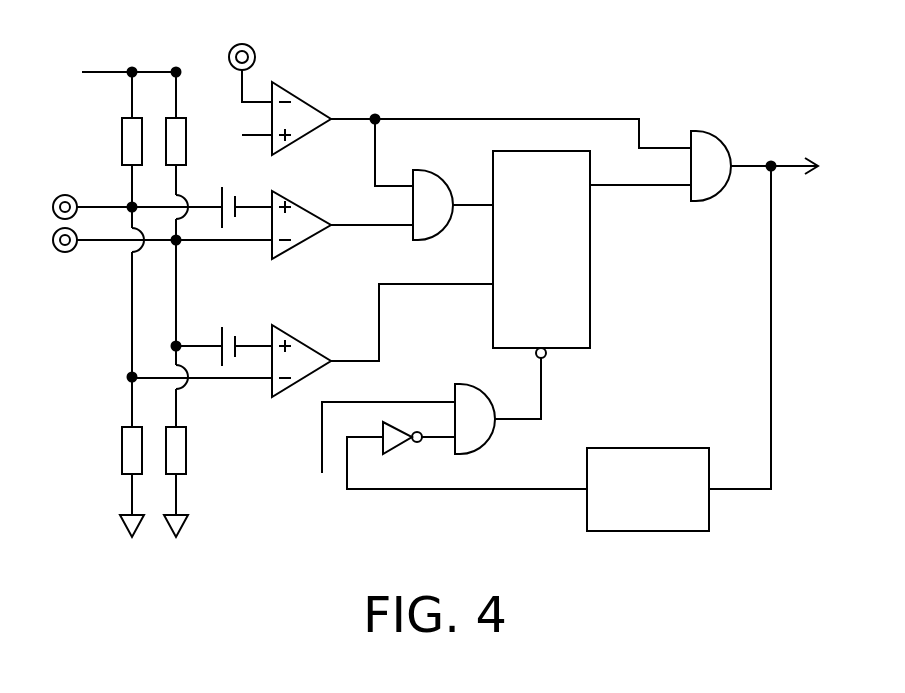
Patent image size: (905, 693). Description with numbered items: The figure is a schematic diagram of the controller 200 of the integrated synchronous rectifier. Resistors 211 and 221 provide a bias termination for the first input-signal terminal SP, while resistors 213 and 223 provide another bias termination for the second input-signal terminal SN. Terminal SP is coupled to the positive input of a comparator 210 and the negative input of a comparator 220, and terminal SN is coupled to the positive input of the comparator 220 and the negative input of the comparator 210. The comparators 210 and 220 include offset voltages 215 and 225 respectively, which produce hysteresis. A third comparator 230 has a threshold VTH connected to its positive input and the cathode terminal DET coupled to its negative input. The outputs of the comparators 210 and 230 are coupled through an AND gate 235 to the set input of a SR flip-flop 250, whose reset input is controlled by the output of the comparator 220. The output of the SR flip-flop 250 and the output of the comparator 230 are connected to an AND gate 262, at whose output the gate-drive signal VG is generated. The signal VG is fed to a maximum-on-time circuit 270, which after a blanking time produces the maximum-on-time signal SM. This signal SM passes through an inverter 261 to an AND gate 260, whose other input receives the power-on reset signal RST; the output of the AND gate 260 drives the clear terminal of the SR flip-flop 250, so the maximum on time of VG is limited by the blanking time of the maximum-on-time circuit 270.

The controller 200 is at (835, 77).
The resistor 211 is at (111, 141).
The resistor 213 is at (198, 128).
The offset voltage 215 is at (243, 196).
The resistor 221 is at (110, 450).
The resistor 223 is at (197, 450).
The offset voltage 225 is at (242, 330).
The comparator 210 is at (305, 217).
The comparator 220 is at (301, 355).
The comparator 230 is at (305, 110).
The AND gate 235 is at (430, 185).
The SR flip-flop 250 is at (573, 268).
The AND gate 260 is at (455, 390).
The inverter 261 is at (388, 454).
The AND gate 262 is at (710, 150).
The maximum-on-time circuit 270 is at (650, 460).